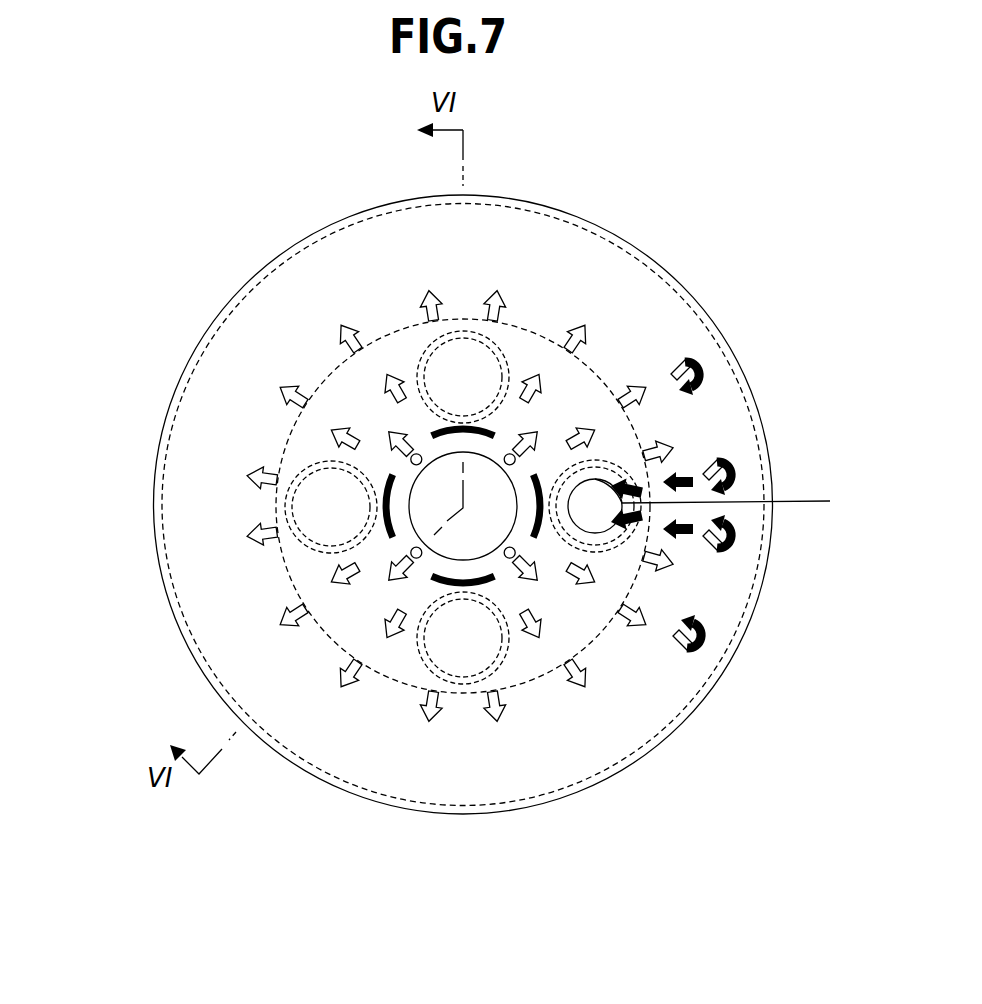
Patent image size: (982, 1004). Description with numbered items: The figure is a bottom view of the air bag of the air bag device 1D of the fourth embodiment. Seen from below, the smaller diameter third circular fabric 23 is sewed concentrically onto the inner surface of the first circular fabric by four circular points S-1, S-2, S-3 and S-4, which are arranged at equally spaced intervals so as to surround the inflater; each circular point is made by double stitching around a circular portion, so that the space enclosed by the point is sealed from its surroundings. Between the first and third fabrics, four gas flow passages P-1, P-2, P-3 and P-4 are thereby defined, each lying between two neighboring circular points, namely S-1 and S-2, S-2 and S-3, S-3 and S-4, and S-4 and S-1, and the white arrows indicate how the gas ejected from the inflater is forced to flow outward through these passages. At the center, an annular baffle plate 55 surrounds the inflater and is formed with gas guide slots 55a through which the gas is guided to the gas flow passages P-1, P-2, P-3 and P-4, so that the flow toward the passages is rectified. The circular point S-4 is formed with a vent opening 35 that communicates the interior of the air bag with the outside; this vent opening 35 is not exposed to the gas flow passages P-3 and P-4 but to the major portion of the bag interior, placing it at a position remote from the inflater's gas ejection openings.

The air bag device 1D is at (745, 105).
The third circular fabric 23 is at (632, 420).
The vent opening 35 is at (724, 505).
The annular baffle plate 55 is at (497, 419).
The gas guide slots 55a is at (397, 468).
The circular point S-1 is at (468, 332).
The circular point S-2 is at (285, 506).
The circular point S-3 is at (465, 684).
The circular point S-4 is at (605, 462).
The gas flow passage P-1 is at (380, 427).
The gas flow passage P-2 is at (378, 587).
The gas flow passage P-3 is at (543, 588).
The gas flow passage P-4 is at (543, 423).